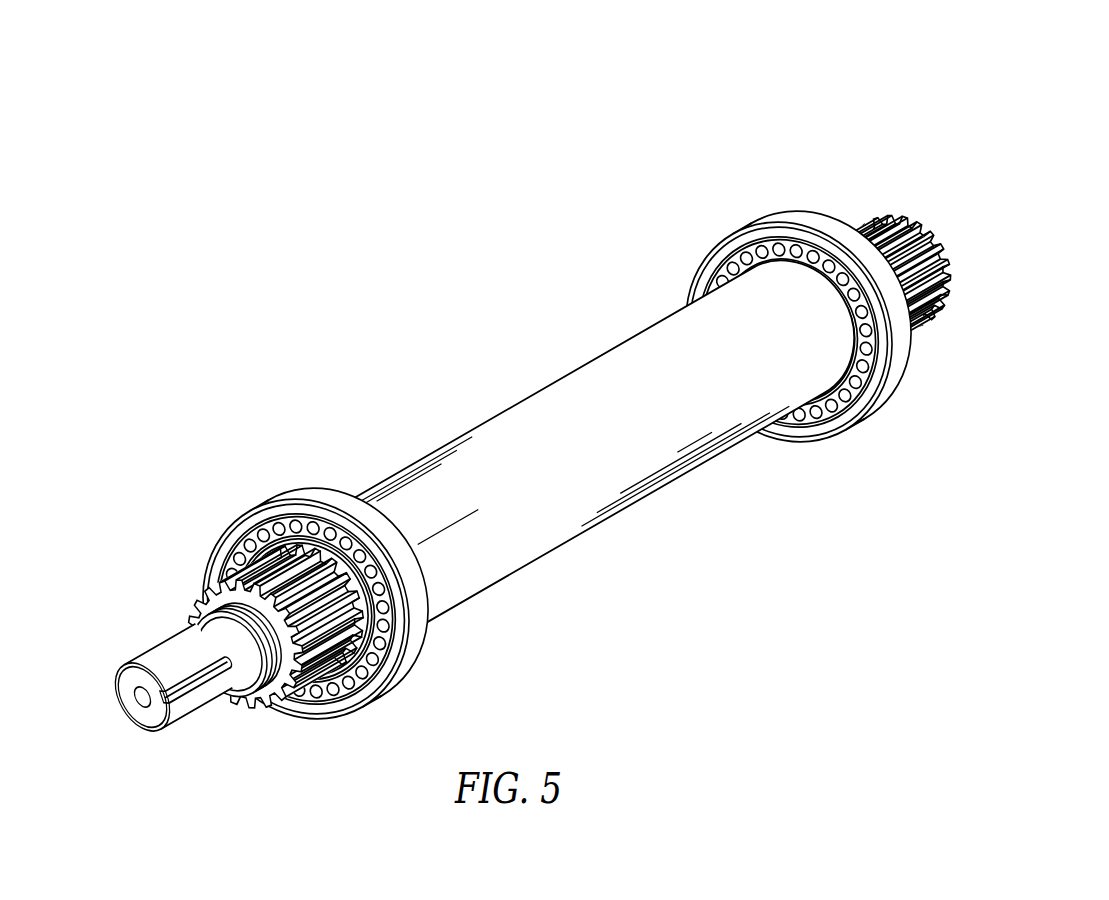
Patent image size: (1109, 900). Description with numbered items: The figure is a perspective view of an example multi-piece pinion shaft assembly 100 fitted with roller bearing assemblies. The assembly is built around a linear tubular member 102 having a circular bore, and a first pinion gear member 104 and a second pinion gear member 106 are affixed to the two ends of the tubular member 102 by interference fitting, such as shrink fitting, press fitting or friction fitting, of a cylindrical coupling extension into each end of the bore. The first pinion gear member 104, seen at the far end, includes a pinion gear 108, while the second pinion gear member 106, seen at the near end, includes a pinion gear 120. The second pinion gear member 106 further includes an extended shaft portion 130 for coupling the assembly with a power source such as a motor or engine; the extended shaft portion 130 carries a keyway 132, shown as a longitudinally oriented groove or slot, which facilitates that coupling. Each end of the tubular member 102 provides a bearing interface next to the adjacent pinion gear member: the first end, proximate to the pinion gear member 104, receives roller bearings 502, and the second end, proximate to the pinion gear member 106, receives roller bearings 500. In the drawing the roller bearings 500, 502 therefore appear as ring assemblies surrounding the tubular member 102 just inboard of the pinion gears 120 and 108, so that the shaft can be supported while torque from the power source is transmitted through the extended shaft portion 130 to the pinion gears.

The multi-piece pinion shaft assembly 100 is at (507, 410).
The linear tubular member 102 is at (600, 425).
The first pinion gear member 104 is at (808, 250).
The second pinion gear member 106 is at (263, 624).
The pinion gear 108 is at (881, 221).
The pinion gear 120 is at (310, 637).
The extended shaft portion 130 is at (173, 706).
The keyway 132 is at (151, 716).
The roller bearings 500 is at (418, 630).
The roller bearings 502 is at (790, 232).